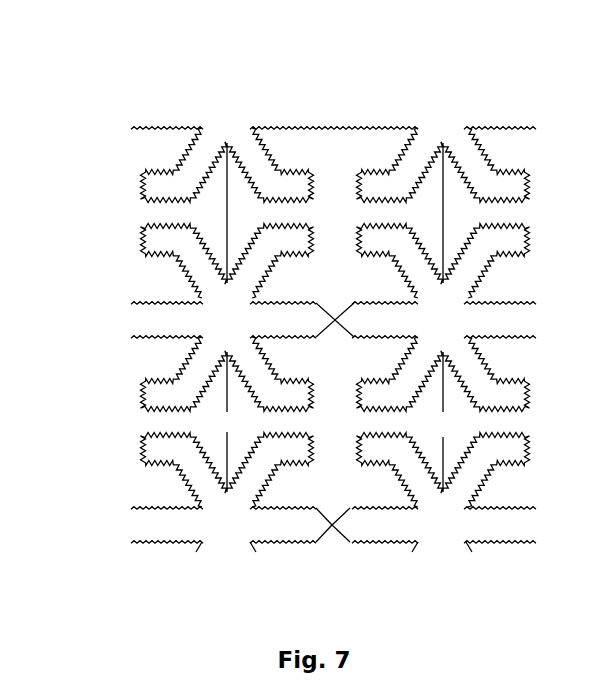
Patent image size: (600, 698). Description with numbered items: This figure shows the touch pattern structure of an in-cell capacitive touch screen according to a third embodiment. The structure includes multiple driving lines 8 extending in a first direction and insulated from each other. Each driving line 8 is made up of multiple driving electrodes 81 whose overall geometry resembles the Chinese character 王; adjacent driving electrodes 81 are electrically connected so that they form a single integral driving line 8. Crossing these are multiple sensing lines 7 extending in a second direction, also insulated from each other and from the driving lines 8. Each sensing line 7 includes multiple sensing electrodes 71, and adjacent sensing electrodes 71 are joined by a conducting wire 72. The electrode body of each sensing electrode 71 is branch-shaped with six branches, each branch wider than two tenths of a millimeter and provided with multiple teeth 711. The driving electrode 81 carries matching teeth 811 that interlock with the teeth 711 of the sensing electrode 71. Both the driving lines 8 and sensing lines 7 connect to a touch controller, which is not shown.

The sensing line 7 is at (125, 317).
The sensing electrode 71 is at (172, 322).
The teeth 711 is at (160, 303).
The conducting wire 72 is at (332, 525).
The driving line 8 is at (334, 150).
The driving electrode 81 is at (334, 148).
The teeth 811 is at (405, 127).